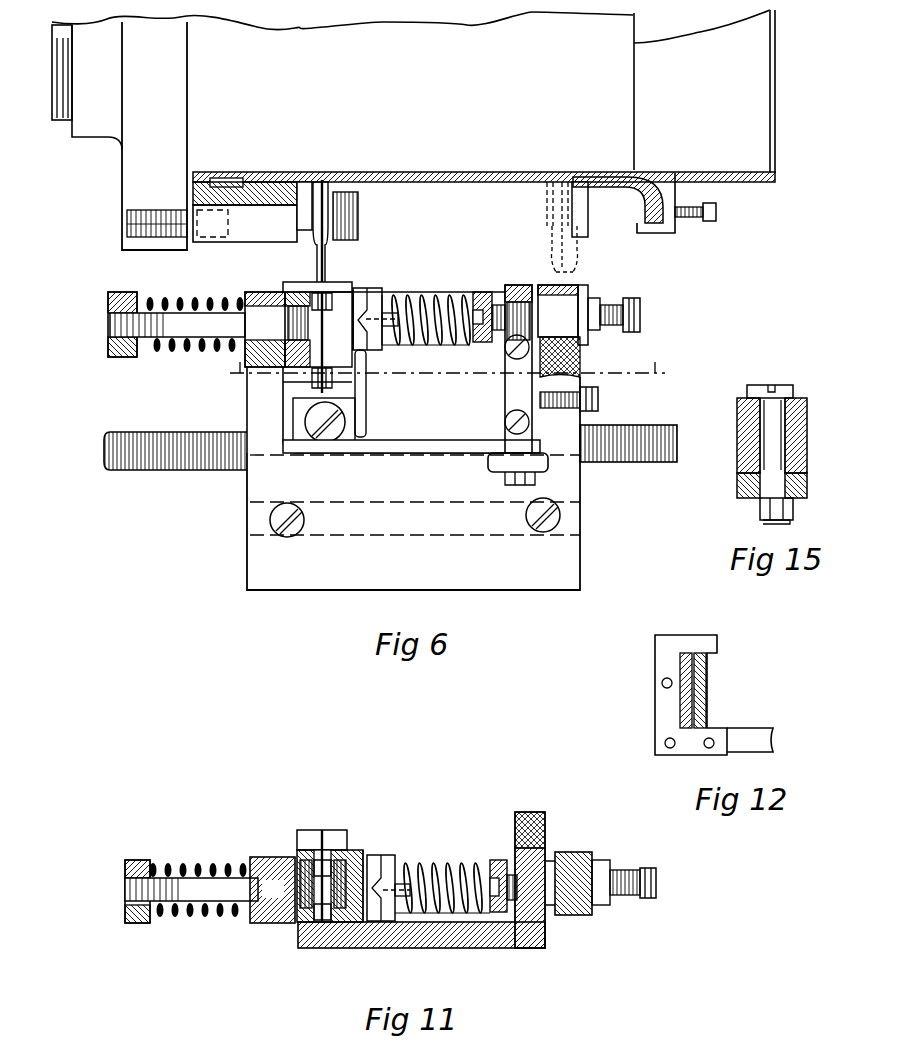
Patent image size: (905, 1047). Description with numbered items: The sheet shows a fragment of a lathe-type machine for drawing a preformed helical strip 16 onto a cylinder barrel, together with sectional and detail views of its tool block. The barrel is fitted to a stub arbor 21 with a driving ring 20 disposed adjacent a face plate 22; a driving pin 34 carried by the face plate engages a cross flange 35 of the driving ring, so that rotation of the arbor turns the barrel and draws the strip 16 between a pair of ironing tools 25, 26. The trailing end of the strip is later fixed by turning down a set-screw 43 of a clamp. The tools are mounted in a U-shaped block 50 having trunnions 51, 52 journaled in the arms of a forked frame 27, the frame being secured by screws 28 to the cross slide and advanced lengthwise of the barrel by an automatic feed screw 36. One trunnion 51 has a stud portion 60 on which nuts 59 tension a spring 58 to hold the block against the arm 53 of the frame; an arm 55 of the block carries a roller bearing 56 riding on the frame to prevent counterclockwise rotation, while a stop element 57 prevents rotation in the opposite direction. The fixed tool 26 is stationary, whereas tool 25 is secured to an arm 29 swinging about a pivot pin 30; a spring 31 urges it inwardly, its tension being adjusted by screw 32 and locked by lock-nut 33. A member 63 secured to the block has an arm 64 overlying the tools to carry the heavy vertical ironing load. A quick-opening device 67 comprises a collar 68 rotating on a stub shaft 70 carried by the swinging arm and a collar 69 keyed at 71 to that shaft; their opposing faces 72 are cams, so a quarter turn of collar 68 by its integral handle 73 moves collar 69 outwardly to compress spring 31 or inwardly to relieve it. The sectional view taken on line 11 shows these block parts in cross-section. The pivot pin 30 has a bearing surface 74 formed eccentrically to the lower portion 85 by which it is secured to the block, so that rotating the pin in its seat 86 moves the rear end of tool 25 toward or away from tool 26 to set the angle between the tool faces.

In FIG. 6, the section line 11 is at (451, 355).
In FIG. 6, the helical strip 16 is at (346, 185).
In FIG. 6, the driving ring 20 is at (205, 182).
In FIG. 6, the stub arbor 21 is at (413, 91).
In FIG. 6, the face plate 22 is at (119, 136).
In FIG. 6, the swinging tool 25 is at (326, 272).
In FIG. 11, the swinging tool 25 is at (342, 855).
In FIG. 6, the fixed tool 26 is at (314, 272).
In FIG. 11, the fixed tool 26 is at (324, 855).
In FIG. 6, the frame 27 is at (413, 483).
In FIG. 6, the screws 28 is at (306, 521).
In FIG. 6, the arm 29 is at (343, 440).
In FIG. 6, the pivot pin 30 is at (394, 410).
In FIG. 15, the pivot pin 30 is at (771, 385).
In FIG. 6, the spring 31 is at (415, 296).
In FIG. 11, the spring 31 is at (447, 865).
In FIG. 6, the screw 32 is at (641, 312).
In FIG. 6, the lock-nut 33 is at (590, 300).
In FIG. 6, the driving pin 34 is at (155, 213).
In FIG. 6, the cross flange 35 is at (252, 212).
In FIG. 6, the automatic feed screw 36 is at (155, 470).
In FIG. 6, the set-screw 43 is at (710, 219).
In FIG. 6, the U-shaped block 50 is at (465, 292).
In FIG. 12, the U-shaped block 50 is at (745, 733).
In FIG. 11, the U-shaped block 50 is at (430, 948).
In FIG. 6, the trunnion 51 is at (265, 329).
In FIG. 11, the trunnion 51 is at (272, 890).
In FIG. 6, the trunnion 52 is at (559, 331).
In FIG. 11, the trunnion 52 is at (548, 920).
In FIG. 6, the arm 53 is at (258, 393).
In FIG. 11, the arm 53 is at (238, 952).
In FIG. 6, the arm 55 is at (506, 382).
In FIG. 11, the arm 55 is at (548, 826).
In FIG. 6, the roller bearing 56 is at (490, 466).
In FIG. 6, the stop element 57 is at (600, 396).
In FIG. 6, the spring 58 is at (175, 298).
In FIG. 11, the spring 58 is at (186, 864).
In FIG. 6, the nuts 59 is at (112, 357).
In FIG. 11, the nuts 59 is at (133, 860).
In FIG. 6, the stud portion 60 is at (177, 325).
In FIG. 11, the stud portion 60 is at (191, 889).
In FIG. 12, the member 63 is at (665, 700).
In FIG. 6, the arm 64 is at (284, 284).
In FIG. 12, the arm 64 is at (697, 635).
In FIG. 11, the arm 64 is at (582, 915).
In FIG. 6, the quick-opening device 67 is at (366, 285).
In FIG. 6, the collar 68 is at (376, 278).
In FIG. 11, the collar 68 is at (378, 855).
In FIG. 6, the collar 69 is at (372, 352).
In FIG. 11, the collar 69 is at (400, 882).
In FIG. 6, the stub shaft 70 is at (392, 310).
In FIG. 6, the key 71 is at (392, 338).
In FIG. 11, the key 71 is at (412, 870).
In FIG. 11, the opposing faces 72 is at (372, 950).
In FIG. 6, the handle 73 is at (368, 402).
In FIG. 15, the bearing surface 74 is at (757, 408).
In FIG. 15, the lower portion 85 is at (790, 520).
In FIG. 15, the seat 86 is at (778, 425).